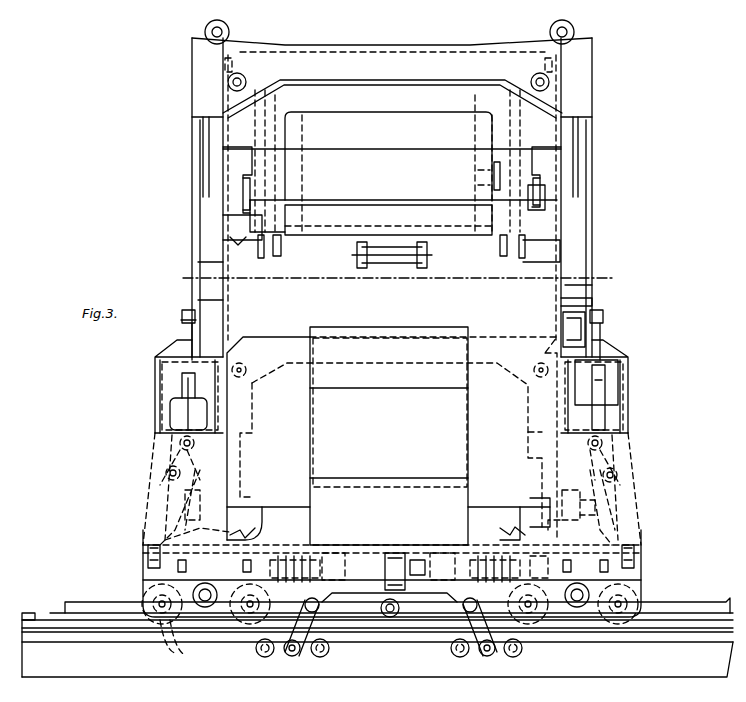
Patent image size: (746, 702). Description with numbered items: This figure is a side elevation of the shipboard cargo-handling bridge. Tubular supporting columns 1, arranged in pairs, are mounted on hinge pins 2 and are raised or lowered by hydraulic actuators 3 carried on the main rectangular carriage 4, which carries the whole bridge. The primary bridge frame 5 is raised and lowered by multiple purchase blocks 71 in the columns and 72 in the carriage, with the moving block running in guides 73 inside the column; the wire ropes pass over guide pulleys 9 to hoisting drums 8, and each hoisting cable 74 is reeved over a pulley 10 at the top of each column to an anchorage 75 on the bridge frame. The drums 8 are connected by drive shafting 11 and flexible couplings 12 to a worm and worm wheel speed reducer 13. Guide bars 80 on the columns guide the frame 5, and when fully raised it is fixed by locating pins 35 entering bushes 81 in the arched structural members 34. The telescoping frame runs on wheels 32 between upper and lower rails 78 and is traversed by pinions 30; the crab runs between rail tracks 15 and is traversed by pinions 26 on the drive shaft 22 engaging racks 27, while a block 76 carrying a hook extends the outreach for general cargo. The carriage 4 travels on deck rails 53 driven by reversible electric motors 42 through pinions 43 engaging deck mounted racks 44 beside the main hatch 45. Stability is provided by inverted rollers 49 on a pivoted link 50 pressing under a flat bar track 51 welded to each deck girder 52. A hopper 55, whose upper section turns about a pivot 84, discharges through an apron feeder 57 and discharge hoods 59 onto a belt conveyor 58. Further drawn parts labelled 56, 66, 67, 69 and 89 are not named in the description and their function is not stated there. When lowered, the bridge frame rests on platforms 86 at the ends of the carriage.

The tubular supporting column 1 is at (192, 262).
The hinge pin 2 is at (155, 375).
The hydraulic actuator 3 is at (182, 412).
The main rectangular carriage 4 is at (162, 447).
The primary bridge frame 5 is at (252, 443).
The hoisting drum 8 is at (150, 545).
The guide pulley 9 is at (180, 473).
The pulley 10 is at (230, 30).
The drive shafting 11 is at (218, 570).
The flexible coupling 12 is at (539, 567).
The single reduction worm and worm wheel speed reducer 13 is at (625, 521).
The upper and lower rail tracks 15 is at (490, 188).
The drive shaft 22 is at (422, 228).
The pinion 26 is at (282, 244).
The rack 27 is at (290, 225).
The pinion 30 is at (263, 242).
The wheel 32 is at (247, 192).
The arched structural member 34 is at (278, 345).
The locating pin 35 is at (246, 82).
The reversible electric motor 42 is at (389, 606).
The pinion 43 is at (390, 620).
The deck mounted rack 44 is at (24, 618).
The main hatch 45 is at (235, 66).
The inverted or trod roller 49 is at (392, 46).
The pivoted link 50 is at (322, 618).
The flat bar track 51 is at (100, 643).
The deck girder 52 is at (644, 657).
The deck rail 53 is at (66, 610).
The hopper 55 is at (310, 402).
The spring 56 is at (330, 553).
The apron feeder 57 is at (215, 580).
The belt conveyor 58 is at (395, 569).
The discharge hood 59 is at (210, 535).
The shaft 66 is at (395, 553).
The nut 67 is at (427, 564).
The wheel 69 is at (258, 652).
The multiple purchase block 71 is at (575, 328).
The multiple purchase block 72 is at (545, 408).
The guide 73 is at (590, 299).
The hoisting cable 74 is at (200, 241).
The anchorage 75 is at (578, 285).
The block 76 is at (160, 510).
The upper and lower rails 78 is at (546, 207).
The guide bar 80 is at (223, 264).
The bush 81 is at (247, 216).
The pivot 84 is at (232, 532).
The platform 86 is at (250, 525).
The cable 89 is at (212, 648).